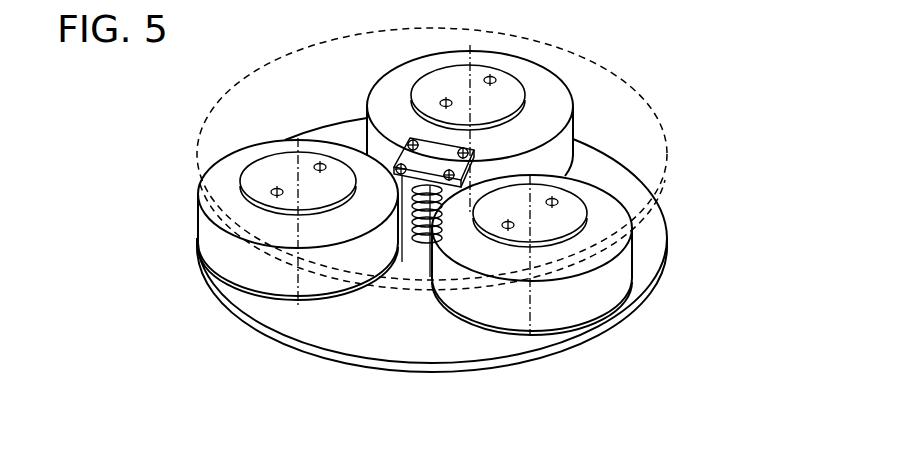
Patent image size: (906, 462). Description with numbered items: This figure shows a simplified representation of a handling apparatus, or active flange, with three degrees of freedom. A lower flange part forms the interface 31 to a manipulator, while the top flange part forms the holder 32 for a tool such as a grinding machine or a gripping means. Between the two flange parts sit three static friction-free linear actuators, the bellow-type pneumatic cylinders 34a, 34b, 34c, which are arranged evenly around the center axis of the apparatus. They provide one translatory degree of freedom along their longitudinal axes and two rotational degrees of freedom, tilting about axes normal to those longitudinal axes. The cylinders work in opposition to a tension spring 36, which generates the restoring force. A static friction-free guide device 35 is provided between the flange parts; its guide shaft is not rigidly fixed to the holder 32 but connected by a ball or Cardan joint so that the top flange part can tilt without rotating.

The interface 31 is at (438, 374).
The holder 32 is at (200, 124).
The bellow-type pneumatic cylinder 34a is at (558, 100).
The bellow-type pneumatic cylinder 34b is at (600, 292).
The bellow-type pneumatic cylinder 34c is at (228, 245).
The static friction-free guide device 35 is at (437, 215).
The tension spring 36 is at (418, 246).